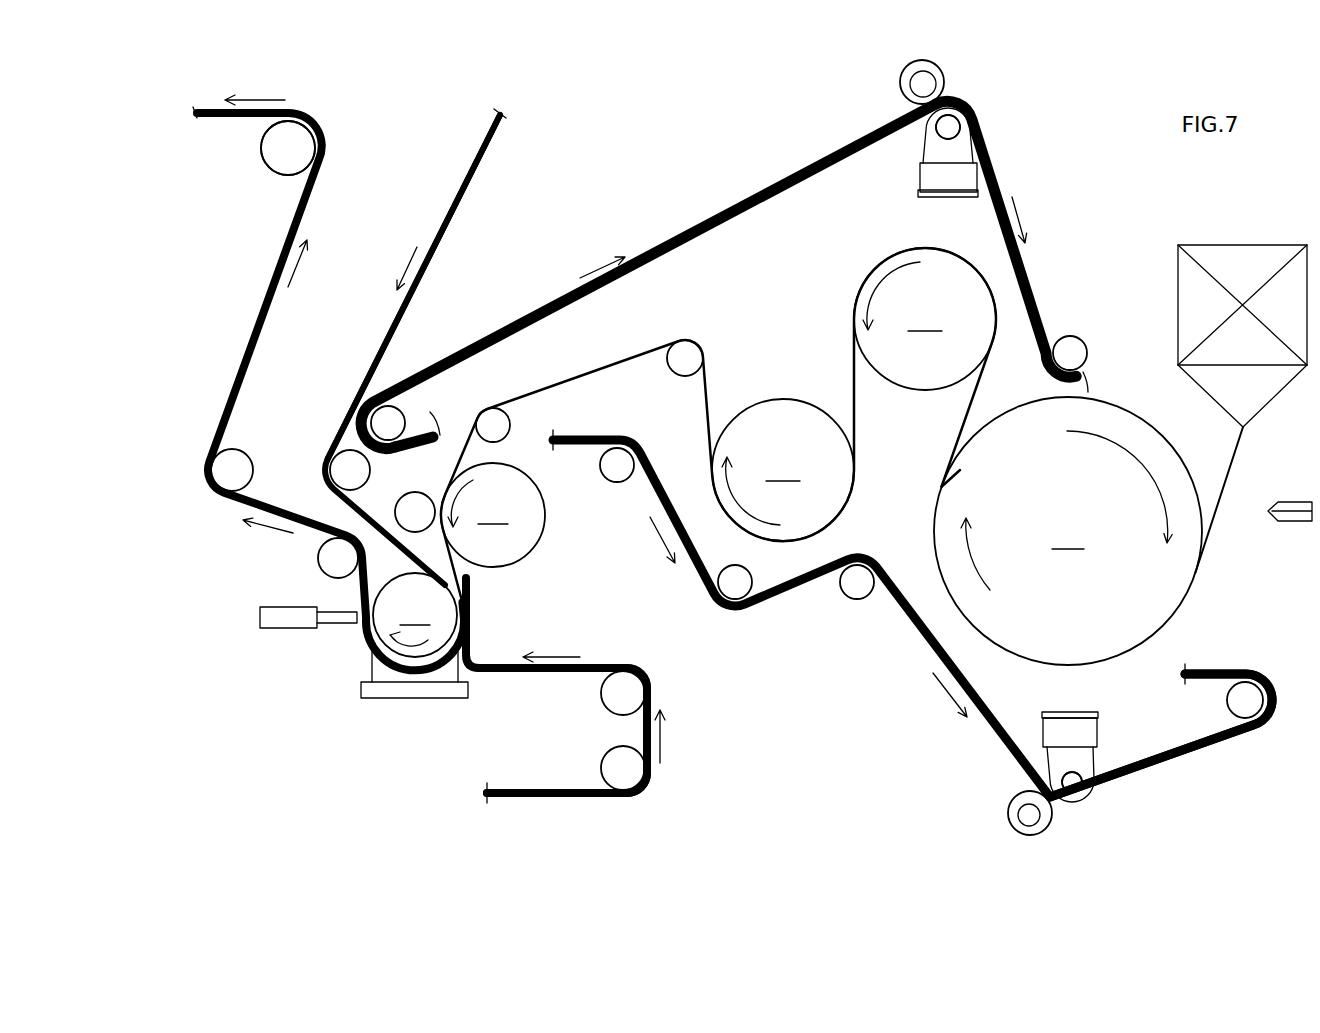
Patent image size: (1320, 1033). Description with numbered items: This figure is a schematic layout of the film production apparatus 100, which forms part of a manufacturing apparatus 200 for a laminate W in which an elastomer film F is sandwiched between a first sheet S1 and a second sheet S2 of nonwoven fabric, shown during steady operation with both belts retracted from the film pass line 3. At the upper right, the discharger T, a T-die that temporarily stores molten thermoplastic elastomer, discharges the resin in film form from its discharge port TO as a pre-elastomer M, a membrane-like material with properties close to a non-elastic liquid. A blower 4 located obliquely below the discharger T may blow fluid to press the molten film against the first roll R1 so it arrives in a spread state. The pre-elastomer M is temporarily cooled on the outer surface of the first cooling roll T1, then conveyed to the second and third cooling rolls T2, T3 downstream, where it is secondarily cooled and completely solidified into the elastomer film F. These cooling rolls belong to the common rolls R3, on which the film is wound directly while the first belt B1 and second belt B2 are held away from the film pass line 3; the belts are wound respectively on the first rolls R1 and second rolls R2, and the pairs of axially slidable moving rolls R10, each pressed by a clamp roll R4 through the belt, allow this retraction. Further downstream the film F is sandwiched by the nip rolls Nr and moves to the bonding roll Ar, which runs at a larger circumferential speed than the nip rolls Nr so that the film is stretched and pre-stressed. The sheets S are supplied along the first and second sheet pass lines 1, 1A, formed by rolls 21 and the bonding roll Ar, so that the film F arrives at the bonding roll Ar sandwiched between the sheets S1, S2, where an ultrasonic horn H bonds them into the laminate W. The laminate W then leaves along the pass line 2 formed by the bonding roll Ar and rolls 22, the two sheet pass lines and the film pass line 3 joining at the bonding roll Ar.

The first sheet pass line 1 is at (498, 672).
The second sheet pass line 1A is at (470, 168).
The pass line for the laminate 2 is at (223, 392).
The film pass line 3 is at (945, 466).
The blower 4 is at (1296, 522).
The rolls 21 is at (353, 470).
The rolls 22 is at (263, 152).
The production apparatus 100 is at (1223, 768).
The manufacturing apparatus 200 is at (322, 716).
The laminate W is at (252, 332).
The sheets S is at (258, 338).
The first sheet S1 is at (495, 672).
The second sheet S2 is at (476, 159).
The elastomer film F is at (243, 362).
The ultrasonic horn H is at (330, 630).
The first belt B1 is at (785, 178).
The second belt B2 is at (920, 645).
The first roll R1 is at (1074, 338).
The second roll R2 is at (617, 484).
The common roll R3 is at (502, 427).
The clamp roll R4 is at (900, 82).
The moving roll R10 is at (966, 125).
The first cooling roll T1 is at (1068, 531).
The second cooling roll T2 is at (925, 319).
The third cooling roll T3 is at (783, 470).
The discharger T is at (1262, 243).
The discharge port TO is at (1246, 428).
The pre-elastomer M is at (1238, 468).
The nip rolls Nr is at (418, 500).
The bonding roll Ar is at (415, 615).